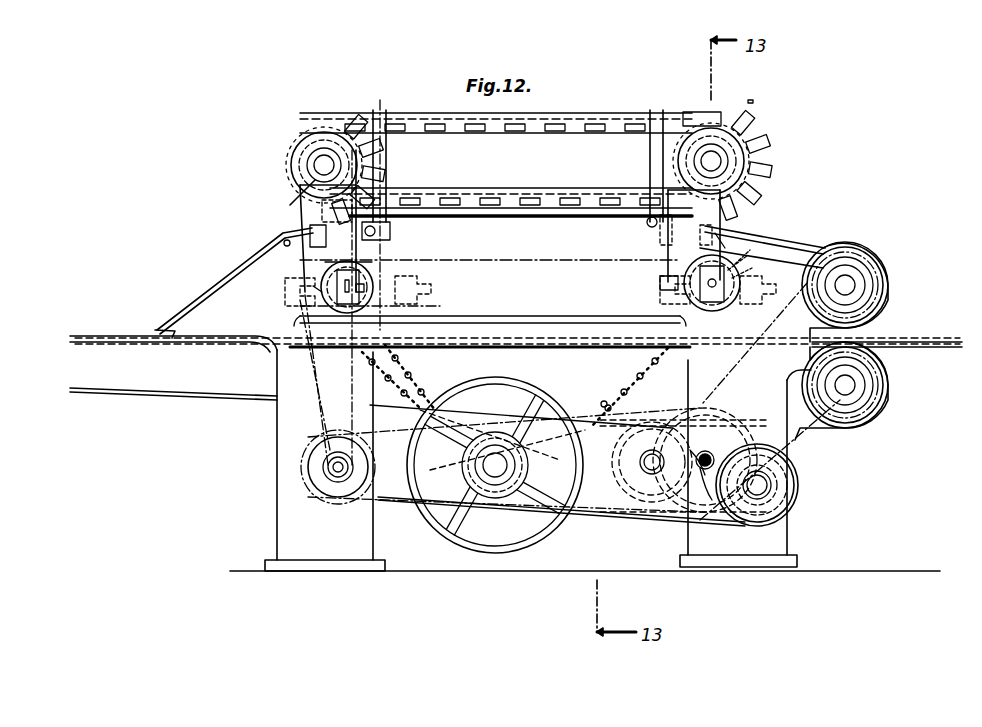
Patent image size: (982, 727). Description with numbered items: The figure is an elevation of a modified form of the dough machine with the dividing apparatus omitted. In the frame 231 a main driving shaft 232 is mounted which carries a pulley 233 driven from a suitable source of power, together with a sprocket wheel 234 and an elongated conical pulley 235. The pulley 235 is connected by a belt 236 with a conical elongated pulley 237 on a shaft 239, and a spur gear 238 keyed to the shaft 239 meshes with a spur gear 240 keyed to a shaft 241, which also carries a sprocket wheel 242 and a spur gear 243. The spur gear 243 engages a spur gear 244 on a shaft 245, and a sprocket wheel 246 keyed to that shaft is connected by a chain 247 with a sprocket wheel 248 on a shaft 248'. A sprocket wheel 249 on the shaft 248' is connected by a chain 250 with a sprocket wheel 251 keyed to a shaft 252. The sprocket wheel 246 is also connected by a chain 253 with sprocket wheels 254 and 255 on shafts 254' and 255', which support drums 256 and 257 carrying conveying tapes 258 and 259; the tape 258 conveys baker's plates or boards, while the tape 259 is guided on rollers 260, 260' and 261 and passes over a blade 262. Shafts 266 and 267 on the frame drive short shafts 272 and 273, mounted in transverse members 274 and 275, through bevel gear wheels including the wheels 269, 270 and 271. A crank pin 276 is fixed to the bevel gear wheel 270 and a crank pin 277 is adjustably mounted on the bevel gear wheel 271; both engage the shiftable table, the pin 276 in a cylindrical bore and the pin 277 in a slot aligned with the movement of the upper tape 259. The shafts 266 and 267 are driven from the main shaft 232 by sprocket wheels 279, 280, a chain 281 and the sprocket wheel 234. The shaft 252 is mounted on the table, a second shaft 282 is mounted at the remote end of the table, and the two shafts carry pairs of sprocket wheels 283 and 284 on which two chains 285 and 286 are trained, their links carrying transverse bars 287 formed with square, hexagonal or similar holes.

The frame 231 is at (775, 556).
The main driving shaft 232 is at (495, 470).
The pulley 233 is at (540, 532).
The sprocket wheel 234 is at (470, 500).
The elongated conical pulley 235 is at (478, 420).
The belt 236 is at (605, 510).
The conical elongated pulley 237 is at (797, 487).
The spur gear 238 is at (772, 494).
The shaft 239 is at (770, 478).
The spur gear 240 is at (728, 425).
The shaft 241 is at (706, 450).
The sprocket wheel 242 is at (702, 470).
The spur gear 243 is at (700, 470).
The spur gear 244 is at (650, 420).
The shaft 245 is at (650, 472).
The sprocket wheel 246 is at (604, 406).
The chain 247 is at (372, 508).
The sprocket wheel 248 is at (298, 477).
The shaft 248' is at (286, 473).
The sprocket wheel 249 is at (334, 477).
The chain 250 is at (318, 408).
The sprocket wheel 251 is at (300, 150).
The shaft 252 is at (326, 160).
The chain 253 is at (733, 355).
The sprocket wheel 254 is at (863, 292).
The shaft 254' is at (868, 280).
The sprocket wheel 255 is at (862, 391).
The shaft 255' is at (870, 385).
The drum 256 is at (882, 280).
The drum 257 is at (866, 410).
The conveying tape 258 is at (150, 390).
The conveying tape 259 is at (818, 248).
The roller 260 is at (678, 236).
The roller 260' is at (371, 221).
The roller 261 is at (275, 248).
The blade 262 is at (182, 326).
The shaft 266 is at (660, 283).
The shaft 267 is at (362, 290).
The bevel gear wheel 269 is at (372, 318).
The bevel gear wheel 270 is at (748, 265).
The bevel gear wheel 271 is at (372, 262).
The short shaft 272 is at (712, 312).
The short shaft 273 is at (345, 313).
The transverse member 274 is at (660, 290).
The transverse member 275 is at (440, 305).
The crank pin 276 is at (742, 230).
The crank pin 277 is at (290, 210).
The sprocket wheel 279 is at (745, 258).
The sprocket wheel 280 is at (313, 286).
The chain 281 is at (505, 262).
The shaft 282 is at (720, 160).
The sprocket wheels 283 is at (672, 155).
The sprocket wheels 284 is at (381, 128).
The chain 285 is at (740, 135).
The chain 286 is at (750, 101).
The transverse bars 287 is at (703, 112).